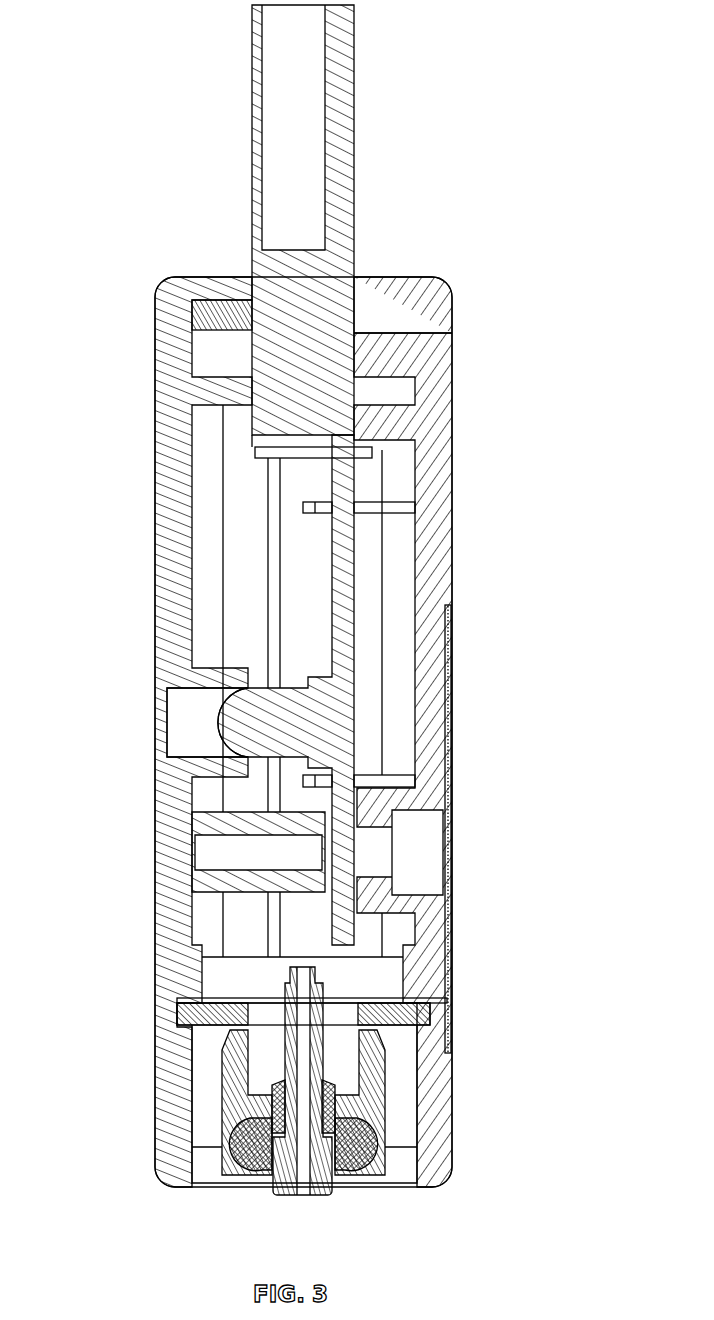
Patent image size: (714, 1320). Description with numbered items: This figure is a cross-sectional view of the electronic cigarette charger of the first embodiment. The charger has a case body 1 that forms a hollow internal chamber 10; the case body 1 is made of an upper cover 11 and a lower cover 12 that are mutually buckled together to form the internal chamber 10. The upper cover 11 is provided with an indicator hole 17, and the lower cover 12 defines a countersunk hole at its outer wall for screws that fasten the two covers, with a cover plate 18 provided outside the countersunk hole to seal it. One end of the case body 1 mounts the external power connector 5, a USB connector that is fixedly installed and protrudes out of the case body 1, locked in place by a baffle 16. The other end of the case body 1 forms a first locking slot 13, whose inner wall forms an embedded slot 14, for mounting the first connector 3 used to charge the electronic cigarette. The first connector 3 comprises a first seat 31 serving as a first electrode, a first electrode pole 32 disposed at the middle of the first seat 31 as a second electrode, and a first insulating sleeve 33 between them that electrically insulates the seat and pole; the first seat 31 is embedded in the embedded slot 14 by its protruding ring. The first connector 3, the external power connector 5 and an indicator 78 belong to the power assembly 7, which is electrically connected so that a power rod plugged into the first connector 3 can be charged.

The case body 1 is at (573, 273).
The first connector 3 is at (60, 1007).
The external power connector 5 is at (342, 148).
The power assembly 7 is at (342, 626).
The internal chamber 10 is at (312, 562).
The upper cover 11 is at (167, 487).
The lower cover 12 is at (428, 511).
The first locking slot 13 is at (393, 1087).
The embedded slot 14 is at (447, 995).
The baffle 16 is at (223, 315).
The indicator hole 17 is at (178, 722).
The cover plate 18 is at (448, 622).
The first seat 31 is at (190, 1017).
The first electrode pole 32 is at (290, 1037).
The first insulating sleeve 33 is at (258, 1090).
The indicator 78 is at (253, 727).